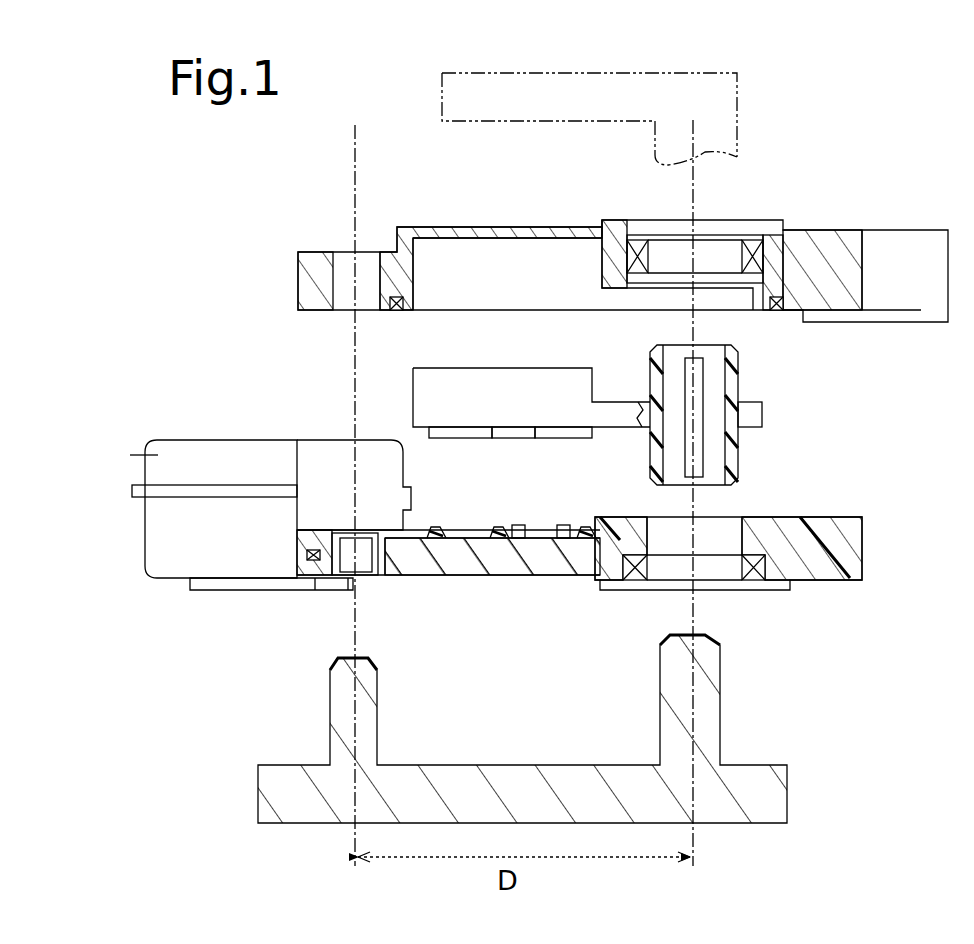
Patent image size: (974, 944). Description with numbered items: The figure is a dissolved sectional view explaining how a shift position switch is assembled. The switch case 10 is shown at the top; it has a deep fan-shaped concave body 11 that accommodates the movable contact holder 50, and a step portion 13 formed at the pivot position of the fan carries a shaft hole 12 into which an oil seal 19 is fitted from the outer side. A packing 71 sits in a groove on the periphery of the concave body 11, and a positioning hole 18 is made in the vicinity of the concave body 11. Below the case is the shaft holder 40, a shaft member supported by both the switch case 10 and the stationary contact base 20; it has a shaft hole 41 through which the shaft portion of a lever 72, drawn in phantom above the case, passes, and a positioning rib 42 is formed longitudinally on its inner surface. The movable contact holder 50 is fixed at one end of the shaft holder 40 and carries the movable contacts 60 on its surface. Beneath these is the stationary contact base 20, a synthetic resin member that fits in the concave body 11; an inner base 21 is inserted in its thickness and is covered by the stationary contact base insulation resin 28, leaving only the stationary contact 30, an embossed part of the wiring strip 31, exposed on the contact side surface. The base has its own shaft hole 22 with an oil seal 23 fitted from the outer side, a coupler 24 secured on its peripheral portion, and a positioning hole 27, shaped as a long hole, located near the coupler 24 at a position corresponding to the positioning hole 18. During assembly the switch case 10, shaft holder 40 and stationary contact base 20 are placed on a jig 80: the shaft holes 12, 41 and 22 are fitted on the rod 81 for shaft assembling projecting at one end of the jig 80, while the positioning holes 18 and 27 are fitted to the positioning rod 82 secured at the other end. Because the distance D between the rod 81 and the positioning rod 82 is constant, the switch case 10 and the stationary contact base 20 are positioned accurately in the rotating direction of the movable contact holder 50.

The switch case 10 is at (858, 222).
The concave body 11 is at (520, 296).
The shaft hole 12 is at (735, 245).
The step portion 13 is at (603, 268).
The positioning hole 18 is at (358, 228).
The oil seal 19 is at (768, 233).
The stationary contact base 20 is at (838, 524).
The inner base 21 is at (550, 578).
The shaft hole 22 is at (660, 590).
The oil seal 23 is at (760, 590).
The coupler 24 is at (150, 457).
The positioning hole 27 is at (378, 586).
The stationary contact base insulation resin 28 is at (500, 578).
The stationary contact 30 is at (578, 528).
The wiring strip 31 is at (565, 527).
The shaft holder 40 is at (746, 369).
The shaft hole 41 is at (718, 479).
The positioning rib 42 is at (687, 480).
The movable contact holder 50 is at (408, 390).
The movable contacts 60 is at (472, 441).
The packing 71 is at (398, 312).
The lever 72 is at (562, 123).
The jig 80 is at (513, 768).
The rod for shaft assembling 81 is at (722, 697).
The positioning rod 82 is at (330, 695).